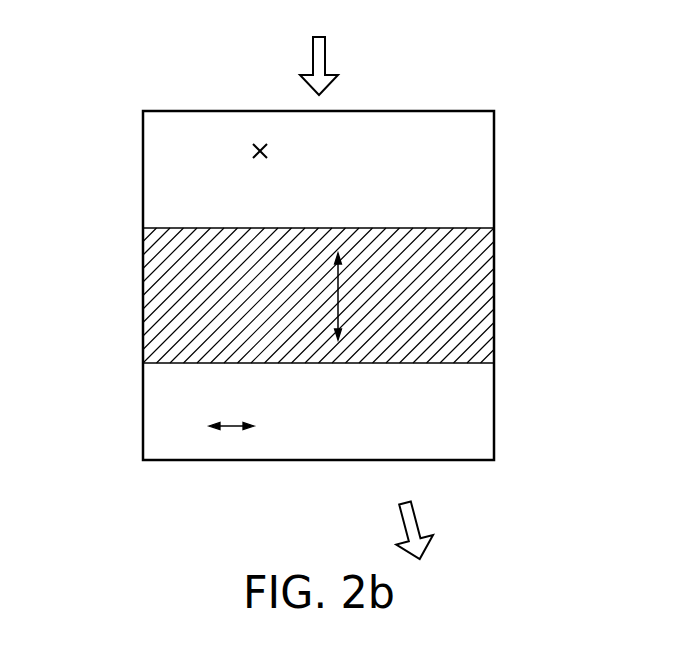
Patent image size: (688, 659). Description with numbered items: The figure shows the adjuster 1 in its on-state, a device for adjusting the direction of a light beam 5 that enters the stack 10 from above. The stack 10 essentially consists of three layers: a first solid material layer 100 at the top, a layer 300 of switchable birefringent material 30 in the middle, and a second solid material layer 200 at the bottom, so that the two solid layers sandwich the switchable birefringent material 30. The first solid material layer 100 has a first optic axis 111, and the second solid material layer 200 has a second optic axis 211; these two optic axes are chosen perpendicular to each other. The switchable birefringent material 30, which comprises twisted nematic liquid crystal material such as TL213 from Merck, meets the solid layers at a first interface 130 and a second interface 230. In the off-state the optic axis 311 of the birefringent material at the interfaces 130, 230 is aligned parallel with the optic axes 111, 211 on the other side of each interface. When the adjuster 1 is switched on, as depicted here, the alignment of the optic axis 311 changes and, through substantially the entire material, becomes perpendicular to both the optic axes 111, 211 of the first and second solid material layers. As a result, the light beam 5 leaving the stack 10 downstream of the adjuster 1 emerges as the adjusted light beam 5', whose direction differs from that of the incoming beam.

The adjuster 1 is at (89, 67).
The stack 10 is at (510, 86).
The first solid material layer 100 is at (150, 147).
The switchable birefringent material 30 is at (150, 314).
The second solid material layer 200 is at (150, 424).
The first interface 130 is at (468, 228).
The second interface 230 is at (468, 363).
The layer of switchable birefringent material 300 is at (512, 306).
The optic axis of the switchable birefringent material 311 is at (340, 297).
The first optic axis 111 is at (270, 152).
The second optic axis 211 is at (232, 428).
The light beam 5 is at (298, 66).
The adjusted light beam 5' is at (392, 531).